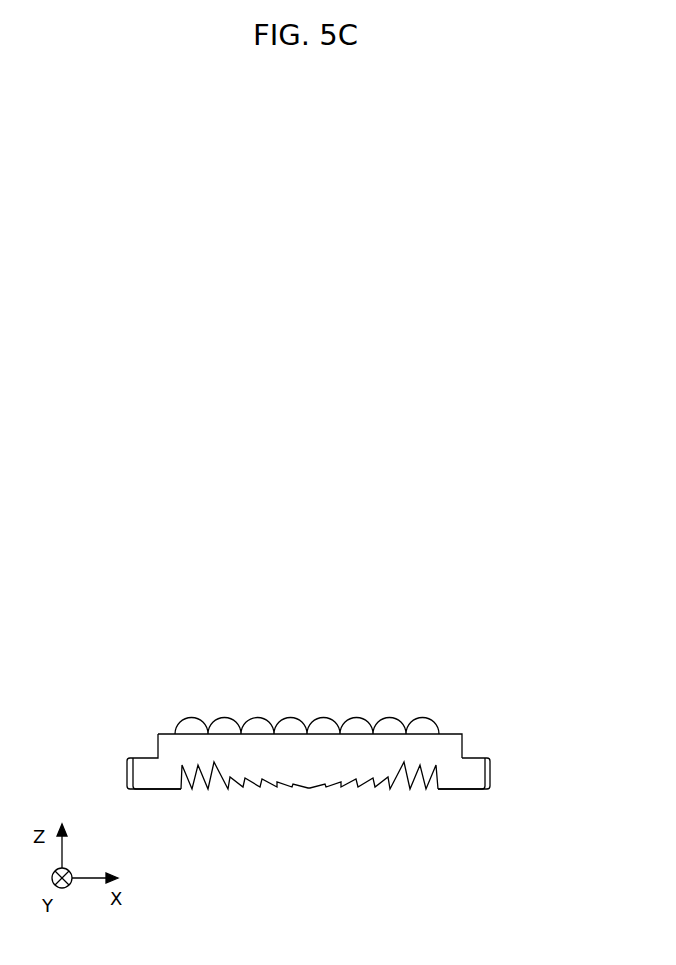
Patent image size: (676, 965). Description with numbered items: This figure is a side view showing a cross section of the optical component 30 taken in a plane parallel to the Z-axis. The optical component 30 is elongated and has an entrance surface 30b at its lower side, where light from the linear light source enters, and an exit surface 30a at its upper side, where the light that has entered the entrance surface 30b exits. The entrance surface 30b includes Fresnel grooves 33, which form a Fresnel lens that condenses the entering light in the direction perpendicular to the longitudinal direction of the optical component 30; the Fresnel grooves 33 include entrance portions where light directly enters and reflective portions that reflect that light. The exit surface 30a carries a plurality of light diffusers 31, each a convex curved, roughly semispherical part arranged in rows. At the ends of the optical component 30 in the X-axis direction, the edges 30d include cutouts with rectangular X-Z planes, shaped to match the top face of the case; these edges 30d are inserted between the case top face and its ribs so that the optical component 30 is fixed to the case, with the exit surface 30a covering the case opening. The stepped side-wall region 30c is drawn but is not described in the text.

The optical component 30 is at (533, 667).
The exit surface 30a is at (455, 733).
The entrance surface 30b is at (463, 790).
The side wall 30c is at (487, 757).
The edge 30d is at (477, 773).
The light diffuser 31 is at (392, 727).
The Fresnel grooves 33 is at (337, 787).